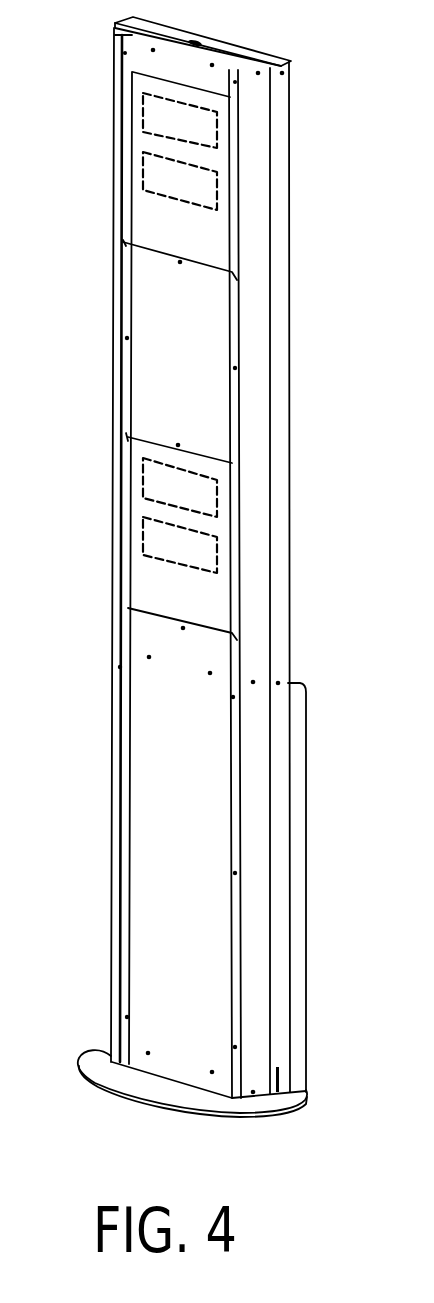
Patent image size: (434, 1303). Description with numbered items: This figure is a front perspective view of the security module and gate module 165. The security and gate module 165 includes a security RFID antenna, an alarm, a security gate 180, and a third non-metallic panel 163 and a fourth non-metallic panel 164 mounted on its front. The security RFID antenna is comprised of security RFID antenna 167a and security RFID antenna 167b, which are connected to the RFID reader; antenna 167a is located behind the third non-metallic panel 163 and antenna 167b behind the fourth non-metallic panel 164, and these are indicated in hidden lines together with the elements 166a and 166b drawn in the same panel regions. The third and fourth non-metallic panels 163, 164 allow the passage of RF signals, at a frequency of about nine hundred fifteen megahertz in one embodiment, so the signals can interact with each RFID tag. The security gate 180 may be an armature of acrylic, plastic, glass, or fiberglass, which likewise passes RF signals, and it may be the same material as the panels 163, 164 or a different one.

The third non-metallic panel 163 is at (172, 257).
The fourth non-metallic panel 164 is at (173, 622).
The security module and gate module 165 is at (255, 853).
The first component location (upper panel) 166a is at (217, 128).
The security RFID antenna 167a is at (217, 185).
The first component location (lower panel) 166b is at (217, 497).
The security RFID antenna 167b is at (217, 555).
The security gate 180 is at (172, 922).